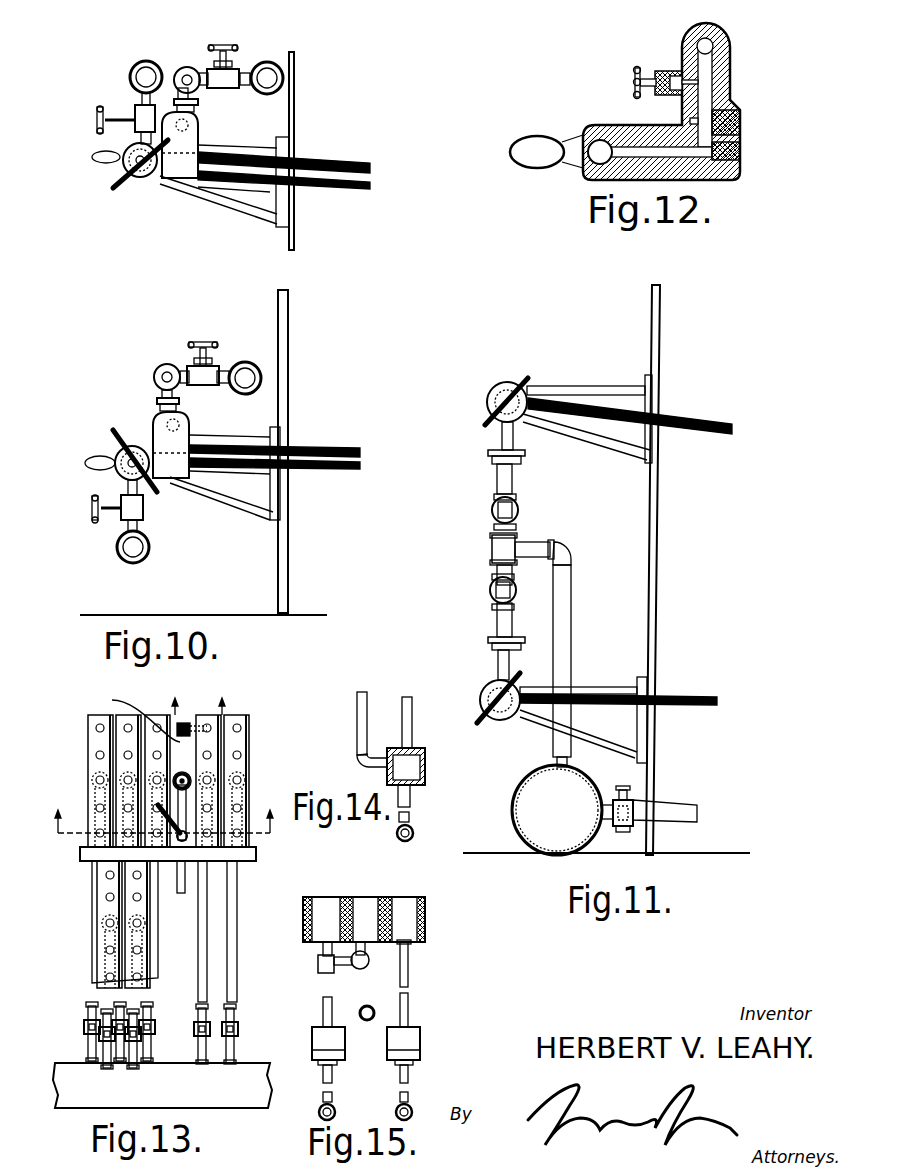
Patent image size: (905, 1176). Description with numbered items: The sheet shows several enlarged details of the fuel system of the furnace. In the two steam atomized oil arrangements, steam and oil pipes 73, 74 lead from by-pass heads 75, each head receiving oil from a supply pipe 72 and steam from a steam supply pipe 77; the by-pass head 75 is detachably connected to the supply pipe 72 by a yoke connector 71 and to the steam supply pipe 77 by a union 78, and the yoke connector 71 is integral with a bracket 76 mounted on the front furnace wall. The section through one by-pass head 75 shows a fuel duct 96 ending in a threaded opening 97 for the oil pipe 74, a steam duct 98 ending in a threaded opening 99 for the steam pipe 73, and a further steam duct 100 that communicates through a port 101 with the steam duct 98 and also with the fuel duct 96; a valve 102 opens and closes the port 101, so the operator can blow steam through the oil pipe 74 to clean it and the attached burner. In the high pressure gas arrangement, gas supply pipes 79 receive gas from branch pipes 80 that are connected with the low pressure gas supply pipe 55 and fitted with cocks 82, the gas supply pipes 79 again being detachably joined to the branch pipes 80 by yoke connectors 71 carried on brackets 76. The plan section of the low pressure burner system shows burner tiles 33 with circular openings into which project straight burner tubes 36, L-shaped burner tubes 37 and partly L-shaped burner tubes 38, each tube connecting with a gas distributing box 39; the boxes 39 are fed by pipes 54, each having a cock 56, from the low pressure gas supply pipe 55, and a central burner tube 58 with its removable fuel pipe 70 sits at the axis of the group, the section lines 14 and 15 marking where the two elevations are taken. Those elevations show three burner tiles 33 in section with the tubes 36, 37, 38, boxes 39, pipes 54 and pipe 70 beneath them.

In FIG. 13, the section line 14- 14 is at (197, 701).
In FIG. 13, the section line 15- 15 is at (160, 838).
In FIG. 15, the burner tiles 33 is at (427, 916).
In FIG. 14, the straight burner tube 36 is at (405, 718).
In FIG. 15, the straight burner tube 36 is at (320, 952).
In FIG. 13, the L-shaped burner tube 37 is at (146, 713).
In FIG. 14, the L-shaped burner tube 37 is at (358, 712).
In FIG. 13, the partly L-shaped burner tube 38 is at (158, 820).
In FIG. 15, the partly L-shaped burner tube 38 is at (328, 996).
In FIG. 13, the gas distributing box 39 is at (92, 740).
In FIG. 14, the gas distributing box 39 is at (412, 765).
In FIG. 15, the gas distributing box 39 is at (420, 1044).
In FIG. 11, the pipes 54 is at (683, 806).
In FIG. 13, the pipes 54 is at (92, 782).
In FIG. 14, the pipes 54 is at (410, 800).
In FIG. 15, the pipes 54 is at (336, 1110).
In FIG. 11, the low pressure gas supply pipe 55 is at (513, 816).
In FIG. 13, the low pressure gas supply pipe 55 is at (167, 1072).
In FIG. 11, the cocks 56 is at (628, 796).
In FIG. 13, the cocks 56 is at (236, 1030).
In FIG. 13, the burner tube 58 is at (187, 776).
In FIG. 13, the fuel pipe 70 is at (180, 895).
In FIG. 15, the fuel pipe 70 is at (358, 997).
In FIG. 10, the yoke connector 71 is at (128, 168).
In FIG. 11, the yoke connector 71 is at (500, 388).
In FIG. 10, the supply pipe 72 is at (128, 72).
In FIG. 10, the steam pipe 73 is at (344, 162).
In FIG. 10, the oil pipe 74 is at (345, 190).
In FIG. 10, the by-pass head 75 is at (174, 165).
In FIG. 12, the by-pass head 75 is at (697, 178).
In FIG. 10, the bracket 76 is at (238, 192).
In FIG. 11, the bracket 76 is at (580, 386).
In FIG. 10, the steam supply pipe 77 is at (278, 64).
In FIG. 10, the union 78 is at (199, 104).
In FIG. 11, the gas supply pipe 79 is at (695, 420).
In FIG. 11, the branch pipe 80 is at (513, 480).
In FIG. 11, the cock 82 is at (495, 510).
In FIG. 12, the fuel duct 96 is at (590, 128).
In FIG. 12, the threaded opening 97 is at (740, 152).
In FIG. 12, the steam duct 98 is at (700, 82).
In FIG. 12, the threaded opening 99 is at (740, 120).
In FIG. 12, the steam duct 100 is at (690, 121).
In FIG. 12, the port 101 is at (731, 76).
In FIG. 12, the valve 102 is at (680, 62).